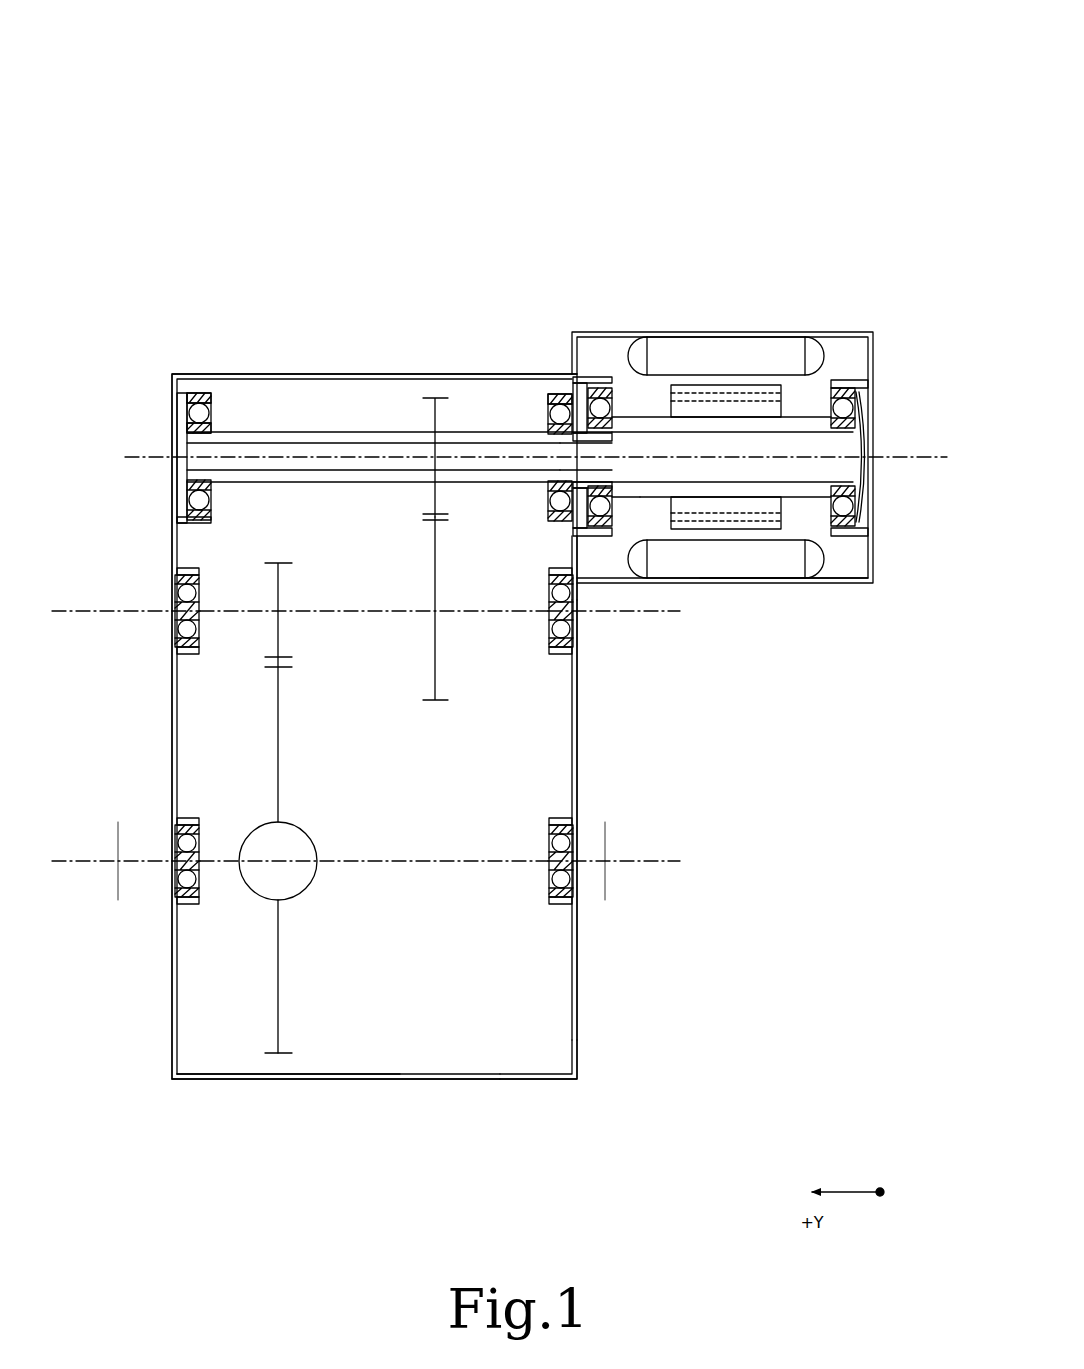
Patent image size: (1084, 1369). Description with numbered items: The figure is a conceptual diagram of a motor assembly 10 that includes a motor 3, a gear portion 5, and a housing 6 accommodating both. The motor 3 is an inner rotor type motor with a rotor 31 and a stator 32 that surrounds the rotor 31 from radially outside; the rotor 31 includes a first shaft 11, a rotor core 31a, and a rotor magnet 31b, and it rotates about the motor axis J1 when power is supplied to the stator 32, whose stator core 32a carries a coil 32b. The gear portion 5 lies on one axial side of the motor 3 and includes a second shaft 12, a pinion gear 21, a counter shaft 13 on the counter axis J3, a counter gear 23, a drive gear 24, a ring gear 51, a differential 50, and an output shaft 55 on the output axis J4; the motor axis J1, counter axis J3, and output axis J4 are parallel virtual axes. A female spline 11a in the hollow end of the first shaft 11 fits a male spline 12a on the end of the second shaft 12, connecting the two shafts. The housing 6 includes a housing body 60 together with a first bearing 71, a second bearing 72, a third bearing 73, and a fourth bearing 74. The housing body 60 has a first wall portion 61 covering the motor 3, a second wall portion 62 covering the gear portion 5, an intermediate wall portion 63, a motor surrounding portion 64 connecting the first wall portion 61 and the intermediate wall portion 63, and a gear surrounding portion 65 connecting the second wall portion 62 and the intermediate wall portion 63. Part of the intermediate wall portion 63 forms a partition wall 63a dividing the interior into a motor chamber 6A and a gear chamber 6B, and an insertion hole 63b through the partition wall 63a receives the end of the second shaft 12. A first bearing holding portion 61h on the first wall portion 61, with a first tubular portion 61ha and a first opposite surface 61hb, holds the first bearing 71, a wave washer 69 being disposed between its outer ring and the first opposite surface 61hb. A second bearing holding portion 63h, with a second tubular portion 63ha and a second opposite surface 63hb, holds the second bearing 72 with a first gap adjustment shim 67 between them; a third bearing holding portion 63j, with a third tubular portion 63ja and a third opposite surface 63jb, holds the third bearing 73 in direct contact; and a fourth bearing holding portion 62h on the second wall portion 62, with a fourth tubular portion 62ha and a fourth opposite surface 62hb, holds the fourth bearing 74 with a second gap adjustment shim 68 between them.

The motor assembly 10 is at (870, 100).
The motor 3 is at (736, 383).
The gear portion 5 is at (418, 712).
The housing 6 is at (525, 762).
The motor chamber 6A is at (852, 560).
The gear chamber 6B is at (362, 1020).
The first shaft 11 is at (728, 364).
The female spline 11a is at (603, 480).
The second shaft 12 is at (454, 364).
The male spline 12a is at (605, 421).
The counter shaft 13 is at (488, 612).
The pinion gear 21 is at (430, 398).
The counter gear 23 is at (430, 700).
The drive gear 24 is at (282, 668).
The rotor 31 is at (754, 532).
The rotor core 31a is at (707, 508).
The rotor magnet 31b is at (752, 530).
The stator 32 is at (726, 333).
The stator core 32a is at (705, 337).
The coil 32b is at (813, 337).
The differential 50 is at (257, 905).
The ring gear 51 is at (270, 1058).
The output shaft 55 is at (487, 864).
The housing body 60 is at (528, 1088).
The first wall portion 61 is at (875, 565).
The first bearing holding portion 61h is at (848, 400).
The first tubular portion 61ha is at (860, 403).
The first opposite surface 61hb is at (835, 400).
The second wall portion 62 is at (168, 1030).
The fourth bearing holding portion 62h is at (249, 346).
The fourth tubular portion 62ha is at (200, 393).
The fourth opposite surface 62hb is at (207, 420).
The intermediate wall portion 63 is at (577, 750).
The partition wall 63a is at (576, 565).
The insertion hole 63b is at (565, 447).
The second bearing holding portion 63h is at (608, 375).
The second tubular portion 63ha is at (558, 396).
The second opposite surface 63hb is at (597, 400).
The third bearing holding portion 63j is at (572, 390).
The third tubular portion 63ja is at (545, 395).
The third opposite surface 63jb is at (548, 517).
The motor surrounding portion 64 is at (845, 378).
The gear surrounding portion 65 is at (303, 1080).
The first gap adjustment shim 67 is at (533, 332).
The second gap adjustment shim 68 is at (180, 393).
The wave washer 69 is at (866, 470).
The first bearing 71 is at (868, 520).
The second bearing 72 is at (601, 515).
The third bearing 73 is at (548, 503).
The fourth bearing 74 is at (213, 500).
The motor axis J1 is at (905, 452).
The counter axis J3 is at (60, 608).
The output axis J4 is at (60, 858).